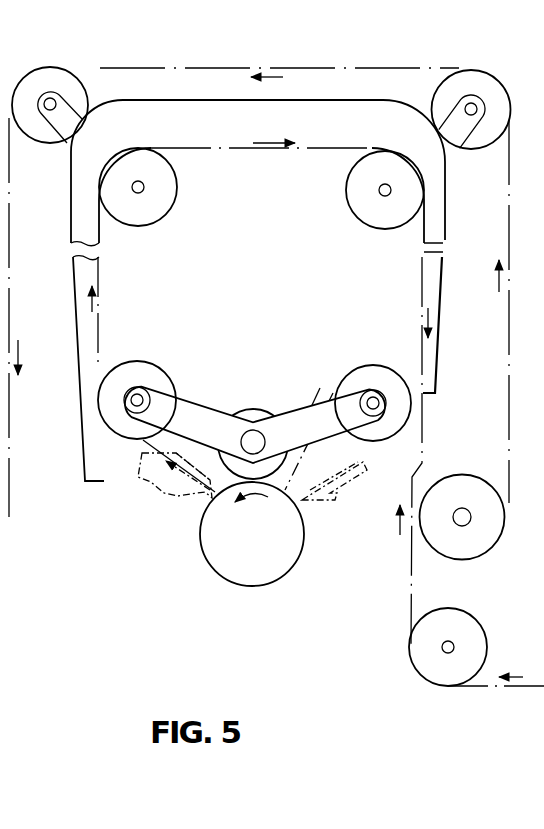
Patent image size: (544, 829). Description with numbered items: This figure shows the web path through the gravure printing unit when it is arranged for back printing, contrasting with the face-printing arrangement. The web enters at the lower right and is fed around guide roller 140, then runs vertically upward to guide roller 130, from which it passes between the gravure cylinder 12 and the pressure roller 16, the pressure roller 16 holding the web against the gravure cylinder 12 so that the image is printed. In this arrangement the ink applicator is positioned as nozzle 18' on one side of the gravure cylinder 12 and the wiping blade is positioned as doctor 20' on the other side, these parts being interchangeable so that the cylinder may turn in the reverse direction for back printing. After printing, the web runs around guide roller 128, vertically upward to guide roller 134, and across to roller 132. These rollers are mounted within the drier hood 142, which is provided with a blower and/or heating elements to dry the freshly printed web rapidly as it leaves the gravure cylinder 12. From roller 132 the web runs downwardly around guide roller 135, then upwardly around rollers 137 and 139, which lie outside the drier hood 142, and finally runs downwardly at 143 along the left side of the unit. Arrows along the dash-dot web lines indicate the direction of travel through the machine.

The gravure cylinder 12 is at (295, 553).
The pressure roller 16 is at (264, 411).
The nozzle 18' is at (166, 495).
The doctor 20' is at (341, 497).
The guide roller 128 is at (160, 378).
The guide roller 130 is at (402, 345).
The roller 132 is at (372, 215).
The guide roller 134 is at (160, 198).
The guide roller 135 is at (462, 485).
The roller 137 is at (487, 83).
The roller 139 is at (53, 73).
The guide roller 140 is at (473, 627).
The drier hood 142 is at (447, 212).
The downward web run 143 is at (9, 500).